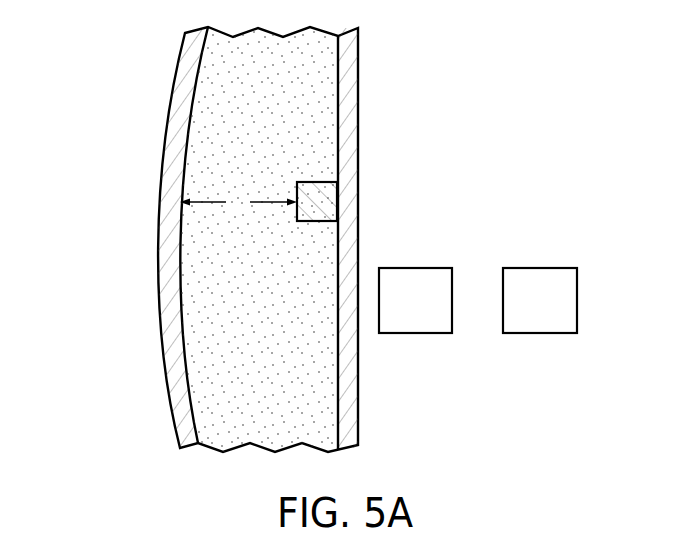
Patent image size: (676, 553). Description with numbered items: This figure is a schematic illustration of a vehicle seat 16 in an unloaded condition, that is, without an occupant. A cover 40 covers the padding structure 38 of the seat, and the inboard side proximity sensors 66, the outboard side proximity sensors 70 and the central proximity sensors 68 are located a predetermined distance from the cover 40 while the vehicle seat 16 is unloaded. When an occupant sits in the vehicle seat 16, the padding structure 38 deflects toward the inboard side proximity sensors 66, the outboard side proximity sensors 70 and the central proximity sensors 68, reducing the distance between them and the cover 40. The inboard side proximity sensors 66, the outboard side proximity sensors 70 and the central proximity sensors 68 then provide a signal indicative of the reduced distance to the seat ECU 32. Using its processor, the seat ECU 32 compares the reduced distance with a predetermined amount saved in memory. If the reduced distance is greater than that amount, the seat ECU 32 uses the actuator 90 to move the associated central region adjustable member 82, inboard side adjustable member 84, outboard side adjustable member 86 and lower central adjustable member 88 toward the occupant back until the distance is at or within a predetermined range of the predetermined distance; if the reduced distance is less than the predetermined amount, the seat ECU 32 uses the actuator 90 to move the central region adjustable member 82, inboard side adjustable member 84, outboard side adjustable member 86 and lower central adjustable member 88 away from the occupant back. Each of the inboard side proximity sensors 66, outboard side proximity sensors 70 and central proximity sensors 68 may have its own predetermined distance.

The vehicle seat 16 is at (131, 93).
The padding structure 38 is at (250, 75).
The cover 40 is at (157, 210).
The inboard side proximity sensors 66 is at (398, 193).
The central proximity sensors 68 is at (398, 193).
The outboard side proximity sensors 70 is at (327, 203).
The central region adjustable member 82 is at (443, 238).
The inboard side adjustable member 84 is at (443, 238).
The outboard side adjustable member 86 is at (443, 238).
The lower central adjustable member 88 is at (350, 394).
The actuator 90 is at (413, 268).
The seat ECU 32 is at (540, 268).